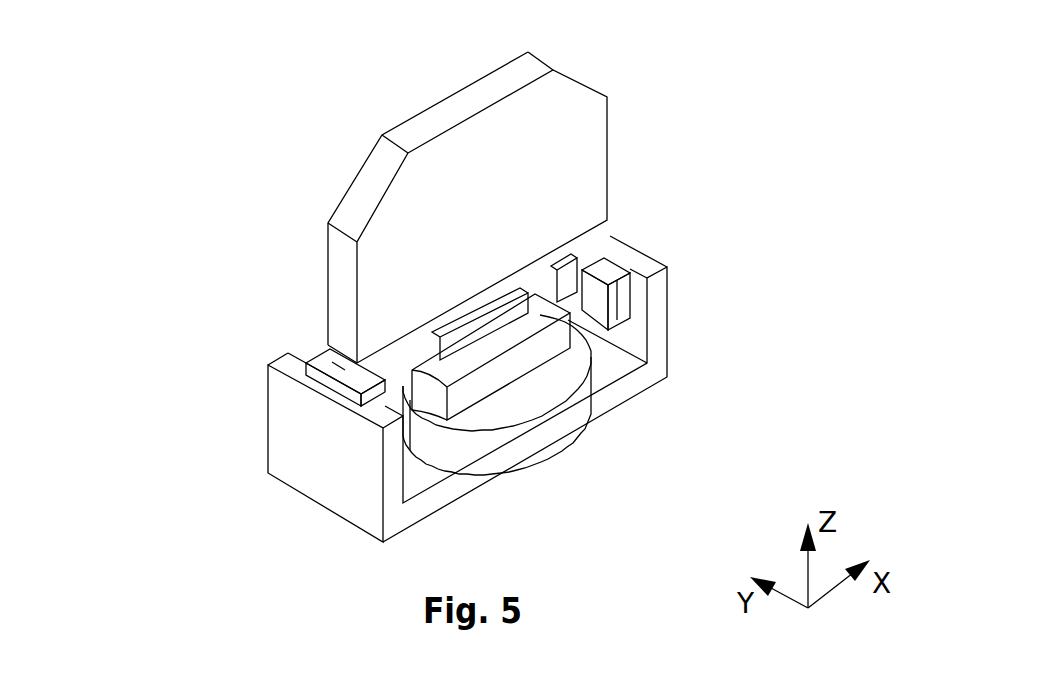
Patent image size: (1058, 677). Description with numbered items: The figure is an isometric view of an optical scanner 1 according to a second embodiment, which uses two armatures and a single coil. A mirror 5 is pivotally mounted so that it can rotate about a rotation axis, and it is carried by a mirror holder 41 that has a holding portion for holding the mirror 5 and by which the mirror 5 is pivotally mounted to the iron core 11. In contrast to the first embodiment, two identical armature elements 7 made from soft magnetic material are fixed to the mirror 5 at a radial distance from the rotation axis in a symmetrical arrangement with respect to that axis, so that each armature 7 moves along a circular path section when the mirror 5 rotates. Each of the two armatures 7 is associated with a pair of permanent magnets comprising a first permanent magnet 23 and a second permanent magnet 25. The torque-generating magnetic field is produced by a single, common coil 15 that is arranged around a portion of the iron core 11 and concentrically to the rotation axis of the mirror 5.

The optical scanner 1 is at (283, 80).
The mirror 5 is at (547, 204).
The armature 7 is at (446, 310).
The iron core 11 is at (527, 389).
The coil 15 is at (593, 407).
The first permanent magnet 23 is at (385, 395).
The second permanent magnet 25 is at (708, 280).
The mirror holder 41 is at (599, 264).